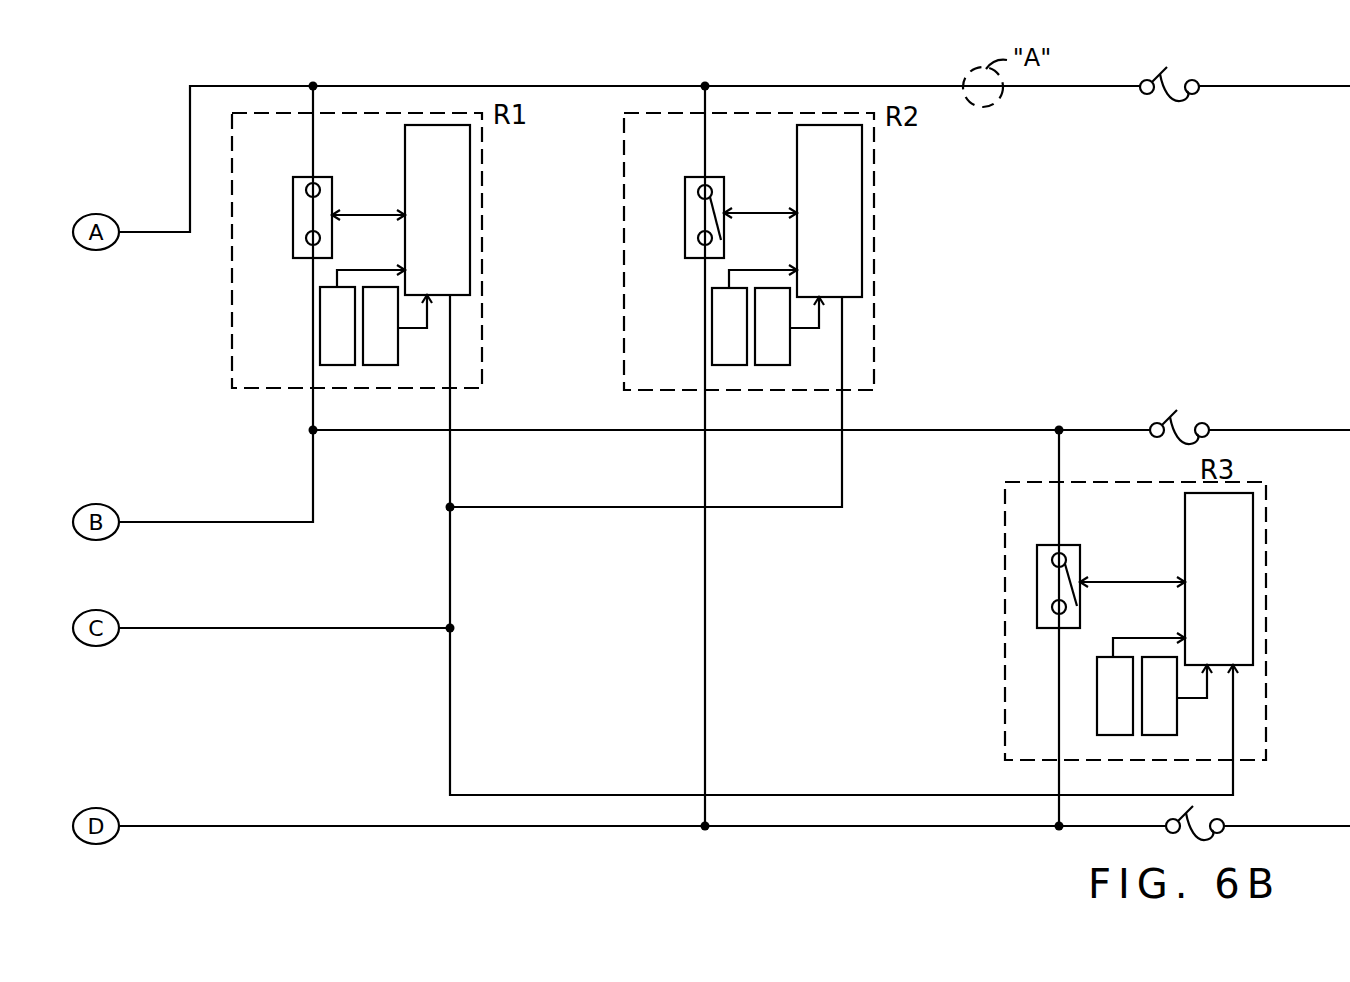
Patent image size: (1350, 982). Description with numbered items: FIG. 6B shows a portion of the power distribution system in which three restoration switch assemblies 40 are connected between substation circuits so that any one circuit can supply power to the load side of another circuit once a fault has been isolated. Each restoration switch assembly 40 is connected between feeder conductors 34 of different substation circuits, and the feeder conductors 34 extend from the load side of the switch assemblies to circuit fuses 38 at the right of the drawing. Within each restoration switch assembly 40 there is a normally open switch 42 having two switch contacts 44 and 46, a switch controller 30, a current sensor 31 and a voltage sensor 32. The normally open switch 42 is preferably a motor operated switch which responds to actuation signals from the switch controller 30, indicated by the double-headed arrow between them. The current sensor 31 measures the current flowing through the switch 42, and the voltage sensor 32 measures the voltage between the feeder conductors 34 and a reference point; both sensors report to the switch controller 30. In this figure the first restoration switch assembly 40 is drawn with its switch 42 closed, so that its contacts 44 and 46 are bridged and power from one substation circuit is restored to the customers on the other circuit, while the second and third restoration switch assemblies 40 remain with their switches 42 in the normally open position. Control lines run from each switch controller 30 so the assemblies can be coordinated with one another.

The switch controller 30 is at (463, 263).
The current sensor 31 is at (328, 318).
The voltage sensor 32 is at (388, 343).
The feeder conductors 34 is at (553, 86).
The circuit fuse 38 is at (1167, 67).
The restoration switch assembly 40 is at (480, 313).
The normally open switch 42 is at (292, 188).
The switch contact 44 is at (328, 190).
The switch contact 46 is at (302, 234).